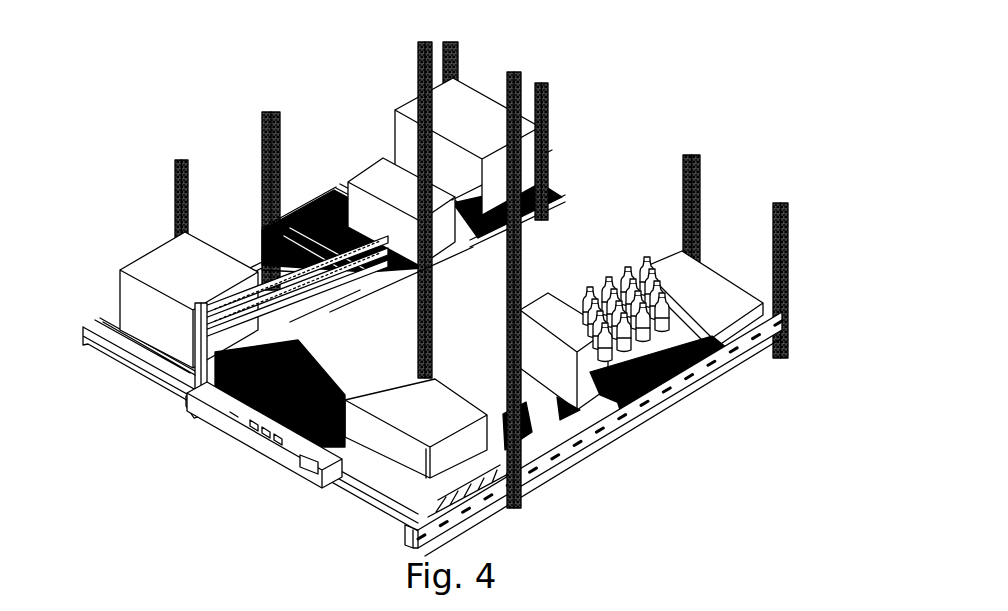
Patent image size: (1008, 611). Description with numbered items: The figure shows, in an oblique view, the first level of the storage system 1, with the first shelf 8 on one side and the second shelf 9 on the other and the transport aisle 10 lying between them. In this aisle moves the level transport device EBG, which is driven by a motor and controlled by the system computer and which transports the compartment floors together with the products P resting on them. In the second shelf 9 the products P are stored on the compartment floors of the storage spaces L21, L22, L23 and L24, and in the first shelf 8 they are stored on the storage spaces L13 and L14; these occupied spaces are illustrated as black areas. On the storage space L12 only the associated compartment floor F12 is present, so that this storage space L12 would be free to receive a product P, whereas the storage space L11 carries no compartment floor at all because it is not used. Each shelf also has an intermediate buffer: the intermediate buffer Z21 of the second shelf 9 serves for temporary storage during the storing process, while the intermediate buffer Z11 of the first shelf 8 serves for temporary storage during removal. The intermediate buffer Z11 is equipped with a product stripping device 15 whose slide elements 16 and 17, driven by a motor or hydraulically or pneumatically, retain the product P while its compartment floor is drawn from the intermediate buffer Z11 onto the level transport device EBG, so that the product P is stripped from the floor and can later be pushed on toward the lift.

The storage system 1 is at (147, 84).
The first shelf 8 is at (564, 92).
The second shelf 9 is at (770, 177).
The transport aisle 10 is at (677, 140).
The products P is at (155, 270).
The storage space L11 is at (253, 260).
The compartment floor F12 is at (297, 212).
The storage space L12 is at (300, 215).
The storage space L13 is at (343, 183).
The storage space L14 is at (392, 155).
The product stripping device 15 is at (363, 303).
The slide element 16 is at (197, 330).
The slide element 17 is at (190, 406).
The level transport device EBG is at (250, 445).
The intermediate buffer Z11 is at (101, 314).
The intermediate buffer Z21 is at (492, 498).
The storage space L21 is at (545, 445).
The storage space L22 is at (597, 417).
The storage space L23 is at (662, 380).
The storage space L24 is at (727, 340).